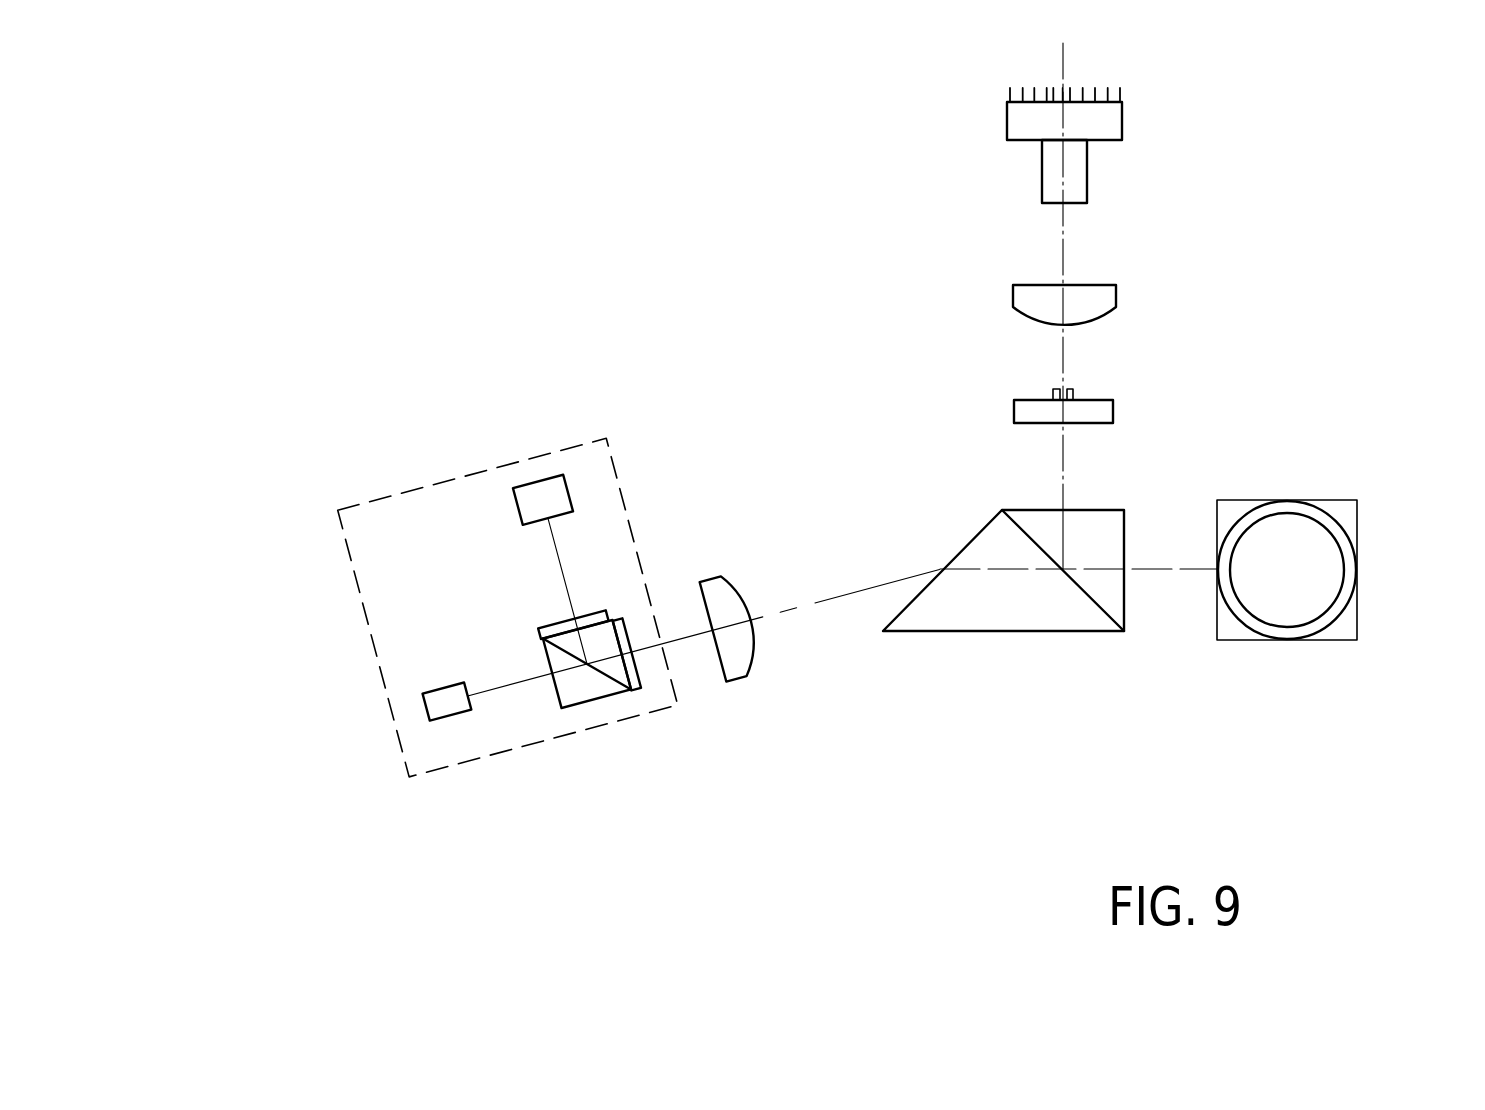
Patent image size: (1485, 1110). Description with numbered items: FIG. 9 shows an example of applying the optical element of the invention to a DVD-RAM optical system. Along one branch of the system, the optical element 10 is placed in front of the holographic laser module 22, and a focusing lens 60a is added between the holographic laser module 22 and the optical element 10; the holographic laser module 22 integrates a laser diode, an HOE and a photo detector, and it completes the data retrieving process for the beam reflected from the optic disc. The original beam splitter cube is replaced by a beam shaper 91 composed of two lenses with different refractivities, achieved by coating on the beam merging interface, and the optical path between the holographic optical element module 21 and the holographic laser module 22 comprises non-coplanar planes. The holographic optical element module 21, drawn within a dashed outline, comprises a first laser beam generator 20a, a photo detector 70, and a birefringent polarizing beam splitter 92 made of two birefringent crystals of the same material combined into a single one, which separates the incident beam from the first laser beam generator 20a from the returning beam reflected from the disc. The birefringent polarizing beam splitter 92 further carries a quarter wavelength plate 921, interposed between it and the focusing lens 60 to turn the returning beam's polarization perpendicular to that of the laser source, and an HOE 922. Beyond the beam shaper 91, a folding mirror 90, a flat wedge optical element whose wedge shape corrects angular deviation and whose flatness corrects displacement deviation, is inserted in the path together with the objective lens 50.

The holographic laser module 22 is at (1020, 128).
The focusing lens 60a is at (1027, 295).
The optical element 10 is at (1100, 413).
The beam shaper 91 is at (987, 633).
The folding mirror 90 is at (1343, 508).
The objective lens 50 is at (1252, 625).
The holographic optical element module 21 is at (343, 578).
The photo detector 70 is at (530, 492).
The first laser beam generator 20a is at (433, 707).
The birefringent polarizing beam splitter 92 is at (580, 693).
The quarter wavelength plate 921 is at (641, 686).
The HOE 922 is at (588, 620).
The focusing lens 60 is at (718, 588).